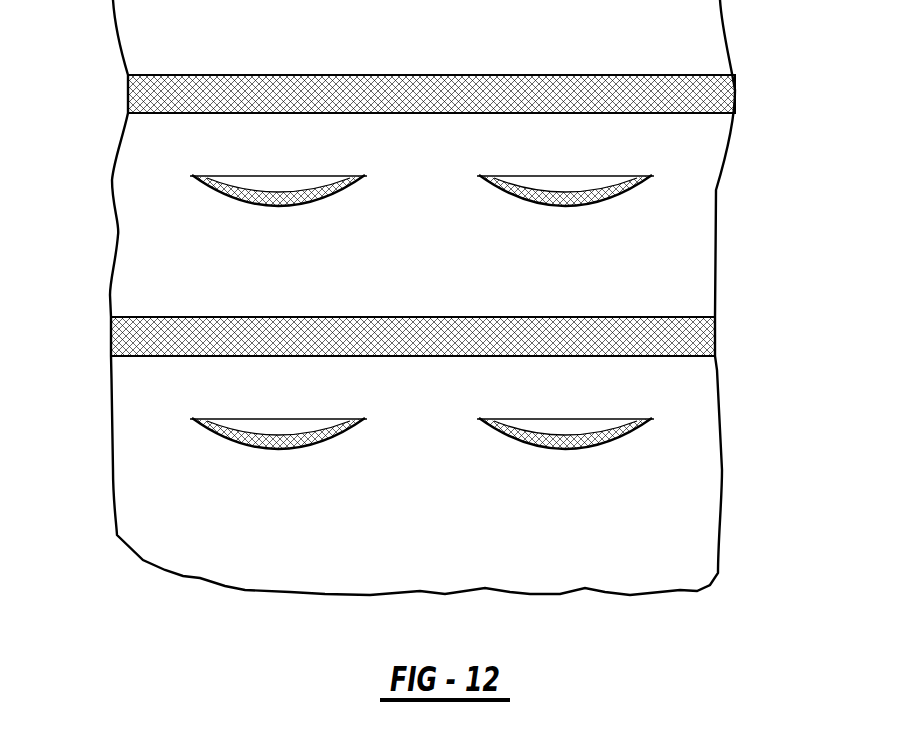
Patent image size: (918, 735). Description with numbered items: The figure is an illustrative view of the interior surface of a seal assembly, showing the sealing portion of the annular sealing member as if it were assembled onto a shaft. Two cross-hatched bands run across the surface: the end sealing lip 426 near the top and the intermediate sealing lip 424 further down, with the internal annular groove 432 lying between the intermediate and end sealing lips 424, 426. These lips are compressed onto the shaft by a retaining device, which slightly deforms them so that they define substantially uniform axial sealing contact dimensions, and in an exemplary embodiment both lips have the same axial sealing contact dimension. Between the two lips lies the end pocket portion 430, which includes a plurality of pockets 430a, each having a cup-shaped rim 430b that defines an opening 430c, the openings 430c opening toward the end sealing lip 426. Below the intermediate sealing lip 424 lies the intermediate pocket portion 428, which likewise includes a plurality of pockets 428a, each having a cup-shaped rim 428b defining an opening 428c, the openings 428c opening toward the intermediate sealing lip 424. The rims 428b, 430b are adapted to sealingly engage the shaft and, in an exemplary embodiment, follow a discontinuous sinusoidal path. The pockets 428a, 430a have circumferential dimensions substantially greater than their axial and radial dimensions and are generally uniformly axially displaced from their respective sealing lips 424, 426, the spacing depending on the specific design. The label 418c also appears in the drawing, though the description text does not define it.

The end sealing lip 426 is at (137, 97).
The intermediate sealing lip 424 is at (147, 337).
The end pocket portion 430 is at (500, 218).
The pockets 430a is at (315, 202).
The cup-shaped rim 430b is at (280, 200).
The opening 430c is at (255, 183).
The internal annular groove 432 is at (443, 228).
The intermediate pocket portion 428 is at (501, 461).
The pockets 428a is at (315, 445).
The cup-shaped rim 428b is at (280, 443).
The opening 428c is at (255, 426).
The lower lens layer 418c is at (455, 455).